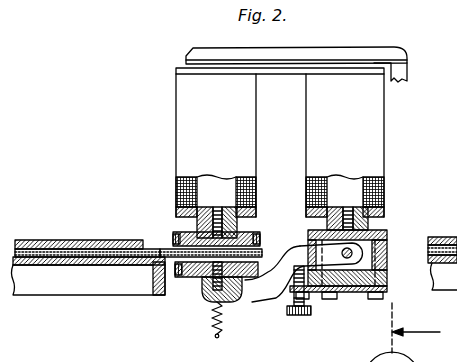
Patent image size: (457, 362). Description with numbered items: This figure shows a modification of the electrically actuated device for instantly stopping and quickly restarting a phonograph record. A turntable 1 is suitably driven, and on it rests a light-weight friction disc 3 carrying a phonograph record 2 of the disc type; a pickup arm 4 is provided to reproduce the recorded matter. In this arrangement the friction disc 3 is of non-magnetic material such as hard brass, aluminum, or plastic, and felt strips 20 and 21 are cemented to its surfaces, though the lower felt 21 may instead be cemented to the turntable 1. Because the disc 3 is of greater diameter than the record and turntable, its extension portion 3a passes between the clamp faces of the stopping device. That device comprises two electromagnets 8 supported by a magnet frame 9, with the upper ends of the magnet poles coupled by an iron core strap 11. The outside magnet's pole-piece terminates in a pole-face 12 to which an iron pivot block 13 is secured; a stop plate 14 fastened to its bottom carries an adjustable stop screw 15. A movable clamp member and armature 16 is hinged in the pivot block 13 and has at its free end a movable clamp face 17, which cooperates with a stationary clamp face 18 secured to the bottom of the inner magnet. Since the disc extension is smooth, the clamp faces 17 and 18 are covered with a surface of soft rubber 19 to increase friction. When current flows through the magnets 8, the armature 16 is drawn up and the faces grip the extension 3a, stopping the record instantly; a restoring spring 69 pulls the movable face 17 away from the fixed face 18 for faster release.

The turntable 1 is at (58, 286).
The phonograph record 2 is at (48, 240).
The friction disc 3 is at (30, 265).
The extension portion of friction disc 3a is at (167, 253).
The pickup arm 4 is at (405, 332).
The electromagnets 8 is at (186, 118).
The magnet frame 9 is at (186, 55).
The iron core strap 11 is at (398, 62).
The pole-face 12 is at (386, 234).
The pivot block 13 is at (368, 260).
The stop plate 14 is at (352, 296).
The stop screw 15 is at (293, 305).
The movable clamp member and armature 16 is at (270, 302).
The movable clamp face 17 is at (199, 278).
The stationary clamp face 18 is at (255, 230).
The soft rubber surface 19 is at (186, 222).
The upper felt strip 20 is at (95, 250).
The lower felt strip 21 is at (112, 282).
The restoring spring 69 is at (222, 326).